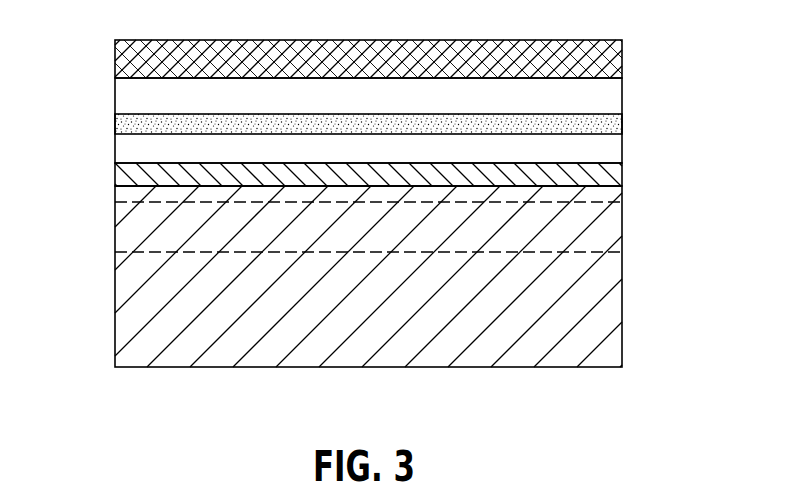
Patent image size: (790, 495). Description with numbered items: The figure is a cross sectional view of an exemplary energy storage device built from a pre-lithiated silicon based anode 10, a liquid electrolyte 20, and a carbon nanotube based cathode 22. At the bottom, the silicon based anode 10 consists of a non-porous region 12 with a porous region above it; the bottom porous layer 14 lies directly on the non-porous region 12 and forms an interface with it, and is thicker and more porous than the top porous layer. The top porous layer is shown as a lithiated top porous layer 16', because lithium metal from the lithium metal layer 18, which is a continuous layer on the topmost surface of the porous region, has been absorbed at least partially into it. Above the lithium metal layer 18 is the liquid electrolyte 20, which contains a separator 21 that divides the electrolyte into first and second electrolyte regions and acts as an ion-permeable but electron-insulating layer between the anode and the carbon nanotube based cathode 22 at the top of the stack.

The silicon based anode 10 is at (110, 185).
The non-porous region 12 is at (610, 308).
The bottom porous layer 14 is at (612, 231).
The lithiated top porous layer 16' is at (414, 179).
The lithium metal layer 18 is at (128, 173).
The liquid electrolyte 20 is at (632, 78).
The separator 21 is at (128, 125).
The carbon nanotube based cathode 22 is at (128, 57).